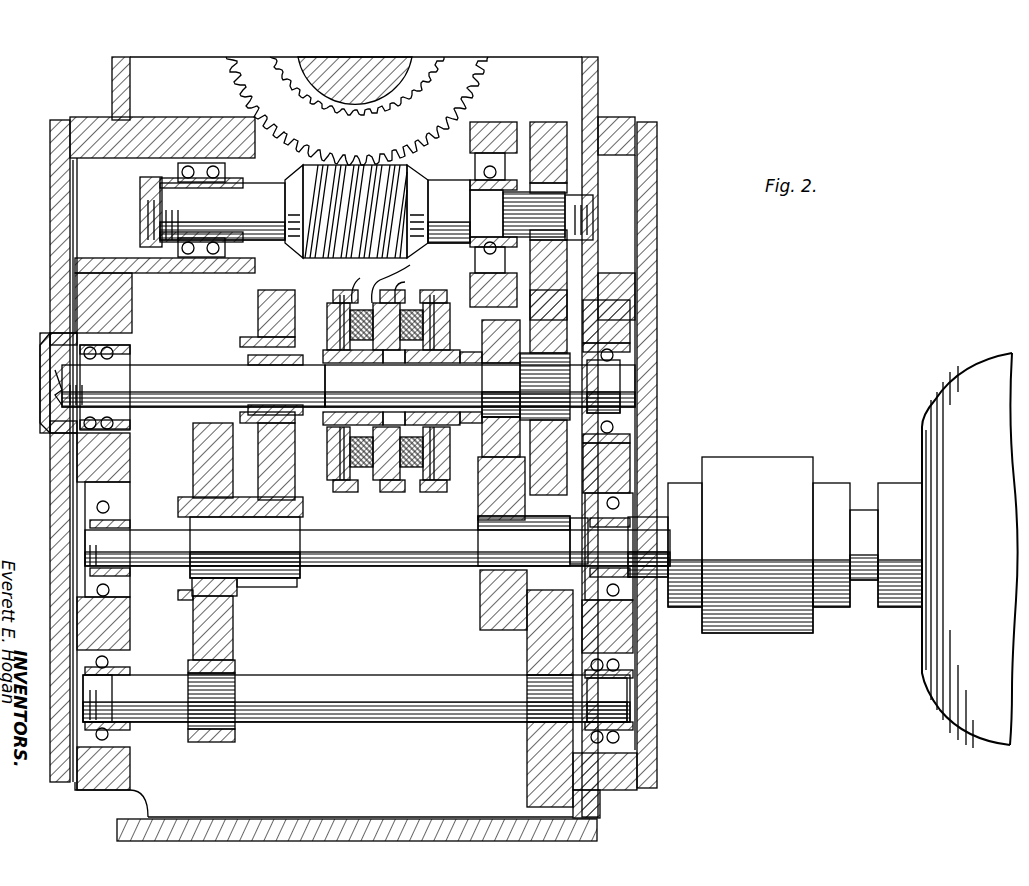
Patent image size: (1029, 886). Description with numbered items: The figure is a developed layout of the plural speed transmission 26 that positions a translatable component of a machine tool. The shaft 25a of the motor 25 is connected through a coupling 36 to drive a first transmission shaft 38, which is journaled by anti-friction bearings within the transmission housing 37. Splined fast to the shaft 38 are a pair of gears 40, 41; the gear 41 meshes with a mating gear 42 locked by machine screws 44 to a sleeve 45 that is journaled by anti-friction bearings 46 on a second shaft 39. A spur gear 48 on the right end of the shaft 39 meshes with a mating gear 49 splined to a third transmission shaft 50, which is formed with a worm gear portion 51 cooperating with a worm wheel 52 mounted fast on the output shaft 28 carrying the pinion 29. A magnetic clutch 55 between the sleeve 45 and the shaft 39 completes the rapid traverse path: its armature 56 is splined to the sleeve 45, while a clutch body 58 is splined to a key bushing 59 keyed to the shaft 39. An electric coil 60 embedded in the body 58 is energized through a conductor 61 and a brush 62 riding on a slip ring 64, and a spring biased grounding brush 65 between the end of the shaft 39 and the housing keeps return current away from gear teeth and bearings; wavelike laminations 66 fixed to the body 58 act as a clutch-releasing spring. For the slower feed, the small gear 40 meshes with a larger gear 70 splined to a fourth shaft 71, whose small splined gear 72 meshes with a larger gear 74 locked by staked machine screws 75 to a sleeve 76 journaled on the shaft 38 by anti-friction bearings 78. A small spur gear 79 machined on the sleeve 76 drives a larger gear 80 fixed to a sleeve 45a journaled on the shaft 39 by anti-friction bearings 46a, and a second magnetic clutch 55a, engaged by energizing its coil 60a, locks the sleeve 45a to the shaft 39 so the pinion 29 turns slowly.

The motor 25 is at (960, 392).
The motor shaft 25a is at (866, 518).
The transmission 26 is at (645, 192).
The output shaft 28 is at (355, 80).
The pinion 29 is at (345, 122).
The coupling 36 is at (738, 470).
The transmission housing 37 is at (657, 436).
The first transmission shaft 38 is at (362, 566).
The second shaft 39 is at (330, 393).
The gear 40 is at (555, 514).
The gear 41 is at (480, 500).
The mating gear 42 is at (482, 345).
The machine screws 44 is at (482, 450).
The sleeve 45 is at (463, 387).
The sleeve 45a is at (330, 345).
The anti-friction bearings 46 is at (500, 415).
The anti-friction bearings 46a is at (276, 365).
The spur gear 48 is at (575, 392).
The mating gear 49 is at (546, 130).
The third transmission shaft 50 is at (443, 195).
The worm gear portion 51 is at (330, 258).
The worm wheel 52 is at (468, 92).
The magnetic clutch 55 is at (407, 490).
The second magnetic clutch 55a is at (368, 487).
The armature 56 is at (432, 387).
The clutch body 58 is at (383, 352).
The key bushing 59 is at (398, 366).
The electric coil 60 is at (447, 300).
The clutch coil 60a is at (374, 453).
The conductor 61 is at (411, 276).
The brush 62 is at (410, 284).
The slip ring 64 is at (351, 277).
The grounding brush 65 is at (55, 385).
The laminations 66 is at (414, 392).
The gear 70 is at (530, 652).
The fourth shaft 71 is at (392, 675).
The splined gear 72 is at (237, 668).
The gear 74 is at (233, 620).
The staked machine screws 75 is at (192, 598).
The sleeve 76 is at (242, 500).
The anti-friction bearings 78 is at (265, 527).
The spur gear 79 is at (285, 588).
The gear 80 is at (262, 307).